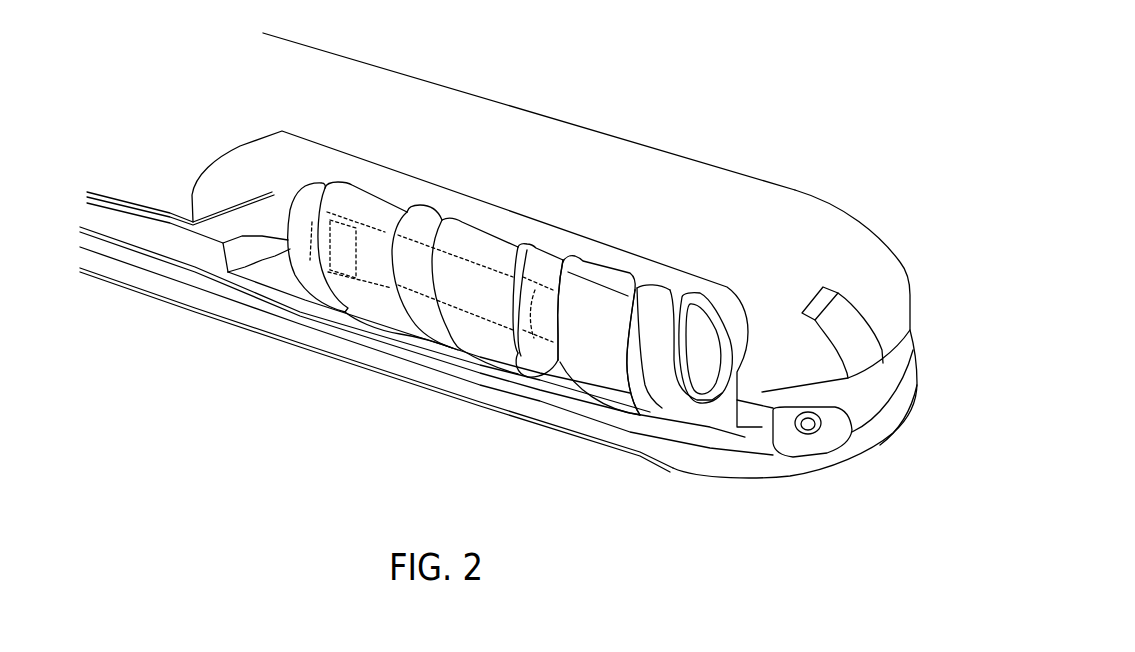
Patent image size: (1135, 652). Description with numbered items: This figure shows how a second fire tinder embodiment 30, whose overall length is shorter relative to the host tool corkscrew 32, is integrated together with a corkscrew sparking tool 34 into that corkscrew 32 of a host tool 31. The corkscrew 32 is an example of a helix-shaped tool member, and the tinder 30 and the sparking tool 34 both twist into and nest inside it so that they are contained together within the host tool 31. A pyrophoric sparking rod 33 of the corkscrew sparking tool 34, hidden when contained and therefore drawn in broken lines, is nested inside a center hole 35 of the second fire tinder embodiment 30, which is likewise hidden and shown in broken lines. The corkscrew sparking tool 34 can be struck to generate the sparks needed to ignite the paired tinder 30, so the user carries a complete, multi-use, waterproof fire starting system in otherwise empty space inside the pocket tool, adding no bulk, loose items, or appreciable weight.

The second fire tinder embodiment 30 is at (380, 201).
The host tool 31 is at (748, 140).
The host tool corkscrew 32 is at (303, 265).
The pyrophoric sparking rod 33 is at (482, 297).
The corkscrew sparking tool 34 is at (593, 338).
The center hole 35 is at (466, 257).